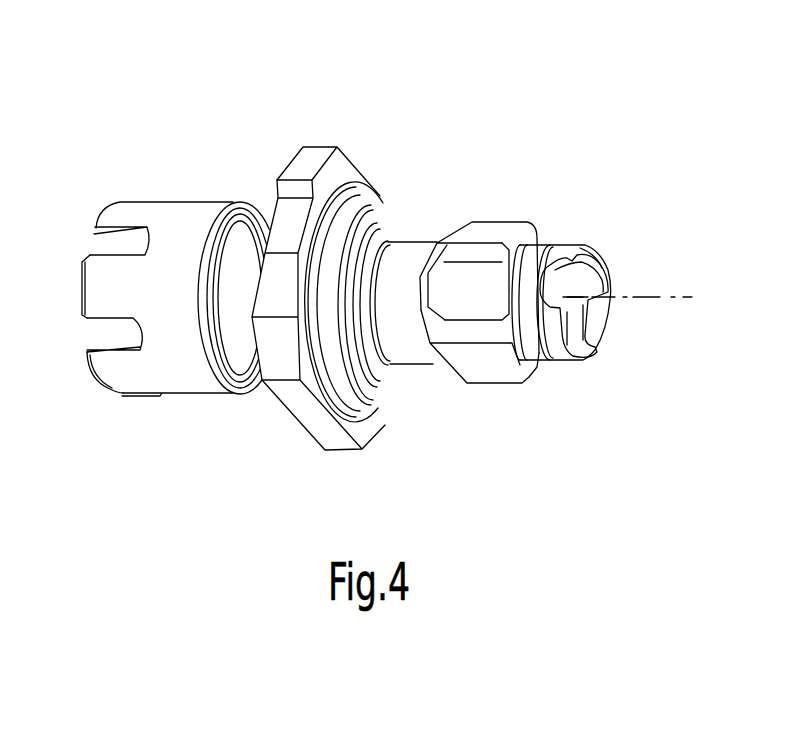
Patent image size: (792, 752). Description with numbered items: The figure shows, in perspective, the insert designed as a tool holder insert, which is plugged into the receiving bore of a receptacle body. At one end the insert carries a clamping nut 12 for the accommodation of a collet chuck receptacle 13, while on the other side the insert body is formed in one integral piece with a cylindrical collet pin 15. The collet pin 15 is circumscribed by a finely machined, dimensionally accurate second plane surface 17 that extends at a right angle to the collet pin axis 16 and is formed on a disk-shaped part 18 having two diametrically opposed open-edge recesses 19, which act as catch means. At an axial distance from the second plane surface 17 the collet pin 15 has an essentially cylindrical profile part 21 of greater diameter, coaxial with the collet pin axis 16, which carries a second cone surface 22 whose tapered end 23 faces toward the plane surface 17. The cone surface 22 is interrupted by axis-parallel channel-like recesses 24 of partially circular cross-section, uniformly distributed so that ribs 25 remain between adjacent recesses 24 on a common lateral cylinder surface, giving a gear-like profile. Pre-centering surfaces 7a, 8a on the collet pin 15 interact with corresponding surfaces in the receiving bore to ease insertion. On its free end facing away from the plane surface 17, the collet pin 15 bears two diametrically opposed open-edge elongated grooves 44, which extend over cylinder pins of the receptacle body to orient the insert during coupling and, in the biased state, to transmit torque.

The clamping nut 12 is at (175, 370).
The collet chuck receptacle 13 is at (242, 370).
The second plane surface 17 is at (332, 395).
The disk-shaped part 18 is at (337, 170).
The open-edge recess 19 is at (270, 225).
The pre-centering surface 7a is at (377, 397).
The collet pin 15 is at (405, 362).
The tapered end 23 is at (410, 238).
The second cone surface 22 is at (453, 228).
The recess 24 is at (485, 360).
The rib 25 is at (478, 253).
The profile part 21 is at (547, 213).
The pre-centering surface 8a is at (557, 247).
The elongated groove 44 is at (567, 283).
The collet pin axis 16 is at (673, 298).